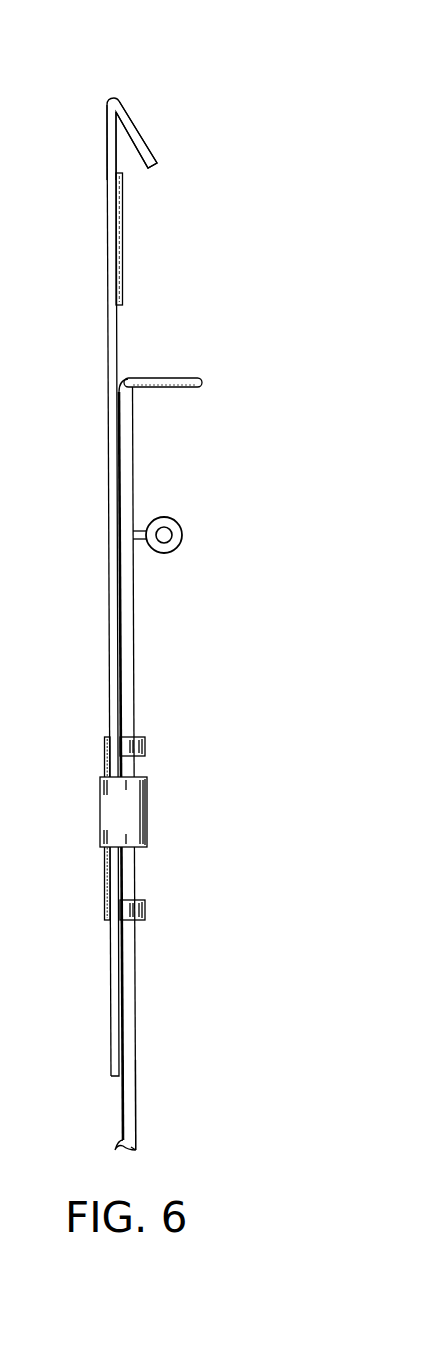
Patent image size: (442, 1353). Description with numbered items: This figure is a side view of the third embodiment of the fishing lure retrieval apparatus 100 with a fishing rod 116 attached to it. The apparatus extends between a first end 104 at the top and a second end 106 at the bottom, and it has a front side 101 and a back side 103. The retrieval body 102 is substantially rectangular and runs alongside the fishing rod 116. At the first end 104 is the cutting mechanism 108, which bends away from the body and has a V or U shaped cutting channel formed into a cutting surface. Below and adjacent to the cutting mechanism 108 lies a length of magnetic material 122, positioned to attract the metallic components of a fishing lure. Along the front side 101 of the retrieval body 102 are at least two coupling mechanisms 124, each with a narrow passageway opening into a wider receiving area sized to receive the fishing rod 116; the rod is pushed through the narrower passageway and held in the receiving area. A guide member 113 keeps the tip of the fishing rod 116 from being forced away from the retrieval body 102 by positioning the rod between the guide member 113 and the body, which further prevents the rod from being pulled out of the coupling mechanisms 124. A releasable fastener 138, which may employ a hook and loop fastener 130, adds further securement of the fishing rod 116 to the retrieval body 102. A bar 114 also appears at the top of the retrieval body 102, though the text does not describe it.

The fishing lure retrieval apparatus 100 is at (222, 51).
The first end 104 is at (77, 116).
The cutting mechanism 108 is at (163, 178).
The length of magnetic material 122 is at (123, 284).
The front side 101 is at (116, 341).
The back side 103 is at (108, 578).
The cross bar 114 is at (203, 381).
The retrieval body 102 is at (89, 424).
The guide member 113 is at (183, 535).
The coupling mechanisms 124 is at (147, 748).
The releasable fastener 138 is at (148, 815).
The hook and loop fastener 130 is at (106, 893).
The fishing rod 116 is at (137, 1108).
The second end 106 is at (84, 1104).